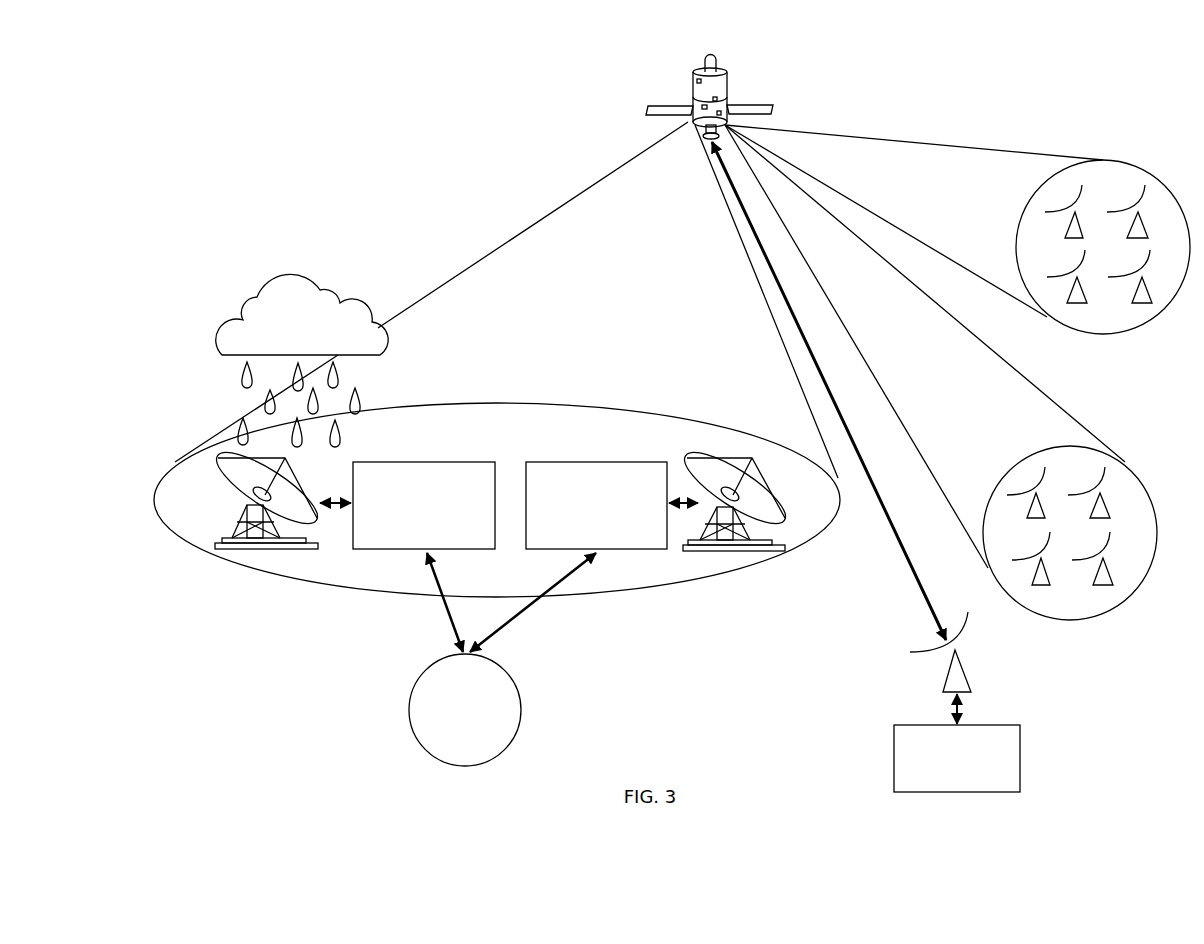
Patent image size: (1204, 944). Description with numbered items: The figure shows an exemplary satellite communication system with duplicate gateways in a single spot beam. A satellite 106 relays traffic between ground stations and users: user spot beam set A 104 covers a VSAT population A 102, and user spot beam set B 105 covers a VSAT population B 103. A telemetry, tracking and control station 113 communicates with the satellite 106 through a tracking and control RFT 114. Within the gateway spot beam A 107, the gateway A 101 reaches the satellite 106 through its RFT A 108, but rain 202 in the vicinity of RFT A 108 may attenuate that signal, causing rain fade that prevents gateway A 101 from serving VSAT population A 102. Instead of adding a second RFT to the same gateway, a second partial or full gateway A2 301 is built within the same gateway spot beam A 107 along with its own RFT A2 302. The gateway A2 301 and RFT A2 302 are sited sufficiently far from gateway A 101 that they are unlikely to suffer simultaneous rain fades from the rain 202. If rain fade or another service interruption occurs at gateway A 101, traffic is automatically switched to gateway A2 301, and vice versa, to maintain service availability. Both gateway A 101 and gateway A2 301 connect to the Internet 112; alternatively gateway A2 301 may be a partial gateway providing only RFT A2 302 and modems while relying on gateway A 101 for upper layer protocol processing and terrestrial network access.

The gateway A 101 is at (427, 461).
The VSAT population A 102 is at (1120, 303).
The VSAT population B 103 is at (1096, 587).
The user spot beam set A 104 is at (1151, 188).
The user spot beam set B 105 is at (1130, 467).
The satellite 106 is at (694, 77).
The gateway spot beam A 107 is at (663, 590).
The RFT A 108 is at (260, 472).
The Internet 112 is at (410, 712).
The telemetry, tracking and control station 113 is at (1022, 737).
The tracking and control RFT 114 is at (952, 656).
The rain 202 is at (248, 295).
The gateway A2 301 is at (573, 461).
The RFT A2 302 is at (750, 457).